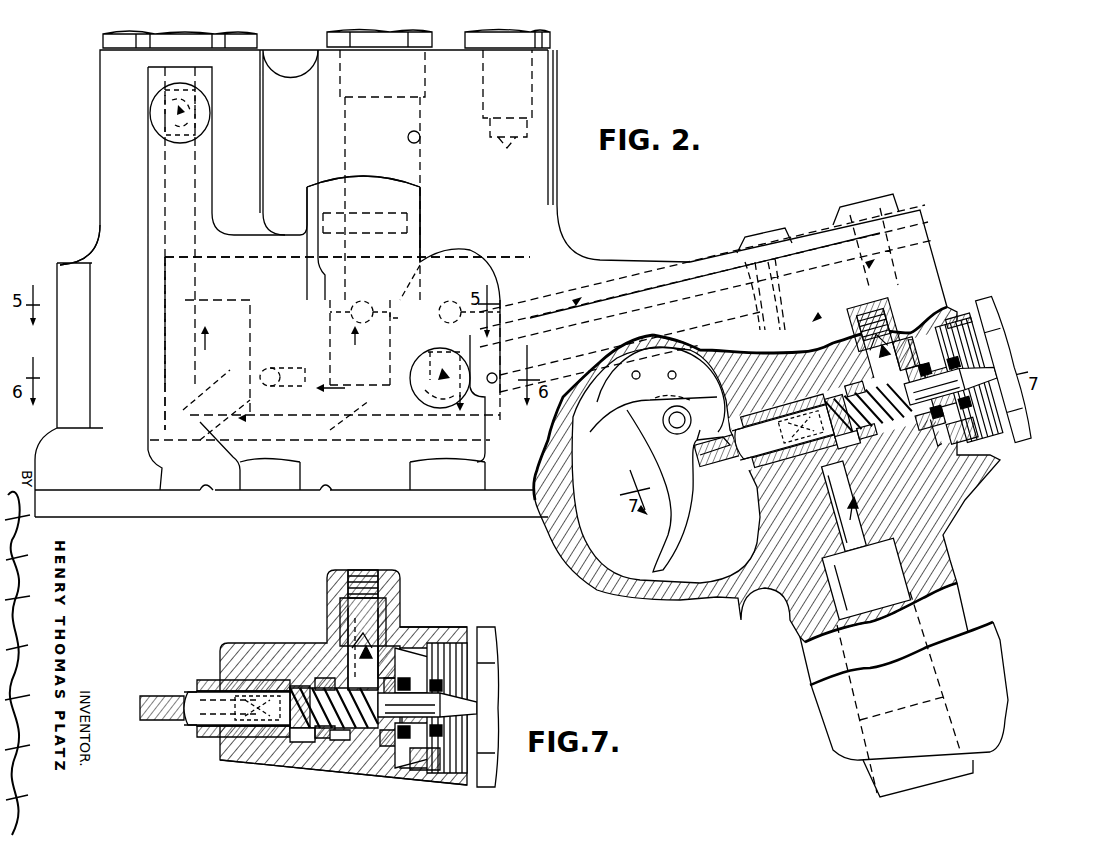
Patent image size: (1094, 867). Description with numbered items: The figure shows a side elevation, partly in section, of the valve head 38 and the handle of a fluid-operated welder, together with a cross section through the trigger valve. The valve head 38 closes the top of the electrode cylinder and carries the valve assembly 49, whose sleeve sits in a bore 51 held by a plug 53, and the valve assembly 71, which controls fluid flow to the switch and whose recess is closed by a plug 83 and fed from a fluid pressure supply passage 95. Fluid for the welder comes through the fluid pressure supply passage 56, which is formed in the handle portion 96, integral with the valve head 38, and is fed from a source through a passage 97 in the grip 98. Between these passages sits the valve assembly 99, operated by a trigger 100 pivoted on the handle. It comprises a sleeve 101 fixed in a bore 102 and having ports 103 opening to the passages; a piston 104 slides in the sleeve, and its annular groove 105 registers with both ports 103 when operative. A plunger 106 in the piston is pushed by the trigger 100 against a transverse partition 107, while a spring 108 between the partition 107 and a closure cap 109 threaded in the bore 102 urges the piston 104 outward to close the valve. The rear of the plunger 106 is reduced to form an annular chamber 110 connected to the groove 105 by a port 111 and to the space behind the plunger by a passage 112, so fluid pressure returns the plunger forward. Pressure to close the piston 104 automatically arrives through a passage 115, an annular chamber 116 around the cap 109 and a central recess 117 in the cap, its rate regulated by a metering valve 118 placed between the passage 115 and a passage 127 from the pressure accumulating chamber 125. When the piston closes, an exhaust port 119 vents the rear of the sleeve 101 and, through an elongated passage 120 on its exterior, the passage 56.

In FIG. 2, the valve head 38 is at (93, 235).
In FIG. 2, the valve assembly 49 is at (414, 147).
In FIG. 2, the bore 51 is at (420, 141).
In FIG. 2, the plug 53 is at (370, 45).
In FIG. 2, the fluid pressure supply passage 56 is at (494, 383).
In FIG. 2, the valve assembly 71 is at (100, 100).
In FIG. 2, the plug 83 is at (103, 38).
In FIG. 2, the fluid pressure supply passage 95 is at (195, 113).
In FIG. 2, the handle portion 96 is at (935, 548).
In FIG. 7, the handle portion 96 is at (332, 677).
In FIG. 2, the passage 97 is at (878, 600).
In FIG. 2, the grip 98 is at (995, 663).
In FIG. 7, the grip 98 is at (347, 687).
In FIG. 2, the valve assembly 99 is at (1005, 432).
In FIG. 7, the valve assembly 99 is at (514, 707).
In FIG. 2, the trigger 100 is at (675, 530).
In FIG. 7, the trigger 100 is at (149, 689).
In FIG. 2, the sleeve 101 is at (838, 375).
In FIG. 7, the sleeve 101 is at (334, 746).
In FIG. 2, the bore 102 is at (868, 368).
In FIG. 7, the bore 102 is at (391, 741).
In FIG. 2, the ports 103 is at (835, 380).
In FIG. 7, the ports 103 is at (347, 705).
In FIG. 2, the piston 104 is at (745, 490).
In FIG. 7, the piston 104 is at (237, 731).
In FIG. 2, the annular groove 105 is at (770, 535).
In FIG. 7, the annular groove 105 is at (271, 745).
In FIG. 2, the plunger 106 is at (728, 478).
In FIG. 7, the plunger 106 is at (237, 677).
In FIG. 2, the transverse partition 107 is at (700, 468).
In FIG. 7, the transverse partition 107 is at (334, 643).
In FIG. 2, the spring 108 is at (900, 478).
In FIG. 7, the spring 108 is at (438, 780).
In FIG. 2, the closure cap 109 is at (945, 352).
In FIG. 7, the closure cap 109 is at (480, 701).
In FIG. 2, the annular chamber 110 is at (788, 365).
In FIG. 7, the annular chamber 110 is at (305, 737).
In FIG. 2, the port 111 is at (740, 432).
In FIG. 7, the port 111 is at (169, 722).
In FIG. 2, the passage 112 is at (775, 445).
In FIG. 7, the passage 112 is at (252, 706).
In FIG. 2, the passage 115 is at (605, 276).
In FIG. 7, the passage 115 is at (422, 679).
In FIG. 2, the annular chamber 116 is at (910, 350).
In FIG. 7, the annular chamber 116 is at (416, 708).
In FIG. 2, the central recess 117 is at (960, 364).
In FIG. 7, the central recess 117 is at (462, 708).
In FIG. 2, the metering valve 118 is at (415, 280).
In FIG. 2, the exhaust port 119 is at (830, 370).
In FIG. 7, the exhaust port 119 is at (396, 582).
In FIG. 2, the elongated passage 120 is at (905, 492).
In FIG. 2, the pressure accumulating chamber 125 is at (240, 262).
In FIG. 2, the passage 127 is at (305, 376).